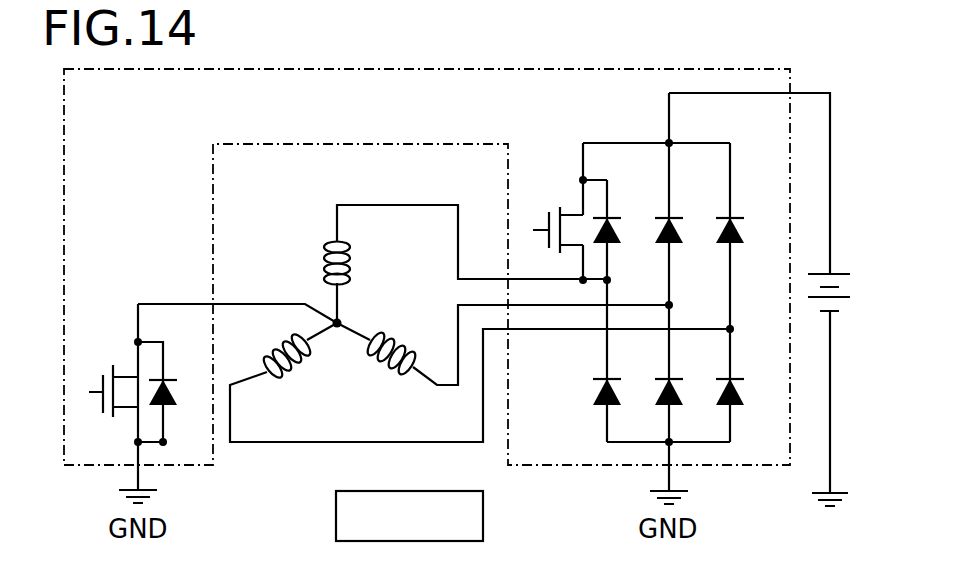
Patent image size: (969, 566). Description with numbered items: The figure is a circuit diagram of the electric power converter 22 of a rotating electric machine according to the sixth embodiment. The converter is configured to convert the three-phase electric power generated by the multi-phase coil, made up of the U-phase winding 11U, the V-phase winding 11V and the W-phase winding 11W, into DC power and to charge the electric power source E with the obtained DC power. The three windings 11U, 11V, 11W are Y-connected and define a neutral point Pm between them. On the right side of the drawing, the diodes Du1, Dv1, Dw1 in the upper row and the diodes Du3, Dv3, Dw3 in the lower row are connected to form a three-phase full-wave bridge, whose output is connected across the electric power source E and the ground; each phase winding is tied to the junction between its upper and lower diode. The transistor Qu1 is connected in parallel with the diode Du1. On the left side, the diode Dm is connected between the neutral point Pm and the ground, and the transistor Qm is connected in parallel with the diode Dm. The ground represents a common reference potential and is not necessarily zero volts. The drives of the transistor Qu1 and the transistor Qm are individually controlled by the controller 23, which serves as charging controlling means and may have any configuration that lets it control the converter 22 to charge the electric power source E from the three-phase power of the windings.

The electric power converter 22 is at (558, 67).
The controller 23 is at (483, 515).
The U-phase winding 11U is at (465, 264).
The V-phase winding 11V is at (480, 382).
The W-phase winding 11W is at (503, 354).
The neutral point Pm is at (361, 310).
The transistor Qm is at (105, 378).
The diode Dm is at (181, 377).
The transistor Qu1 is at (551, 213).
The diode Du1 is at (630, 211).
The diode Dv1 is at (691, 211).
The diode Dw1 is at (754, 211).
The diode Du3 is at (630, 373).
The diode Dv3 is at (691, 373).
The diode Dw3 is at (754, 373).
The electric power source E is at (831, 393).